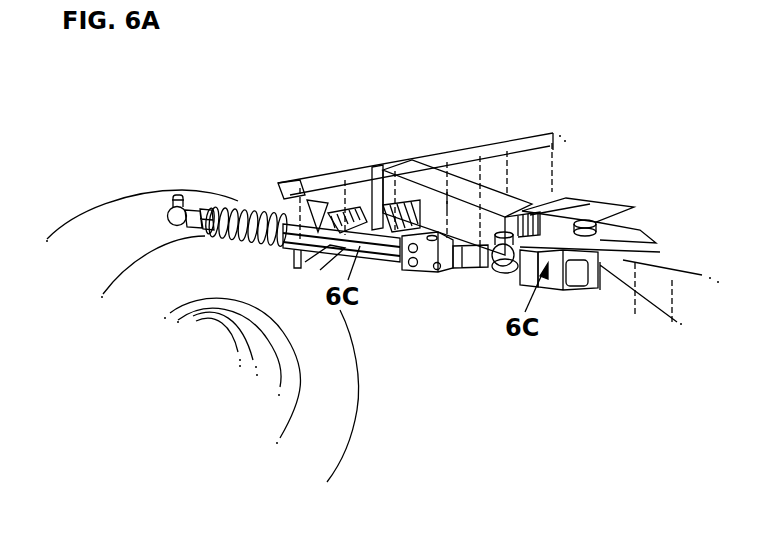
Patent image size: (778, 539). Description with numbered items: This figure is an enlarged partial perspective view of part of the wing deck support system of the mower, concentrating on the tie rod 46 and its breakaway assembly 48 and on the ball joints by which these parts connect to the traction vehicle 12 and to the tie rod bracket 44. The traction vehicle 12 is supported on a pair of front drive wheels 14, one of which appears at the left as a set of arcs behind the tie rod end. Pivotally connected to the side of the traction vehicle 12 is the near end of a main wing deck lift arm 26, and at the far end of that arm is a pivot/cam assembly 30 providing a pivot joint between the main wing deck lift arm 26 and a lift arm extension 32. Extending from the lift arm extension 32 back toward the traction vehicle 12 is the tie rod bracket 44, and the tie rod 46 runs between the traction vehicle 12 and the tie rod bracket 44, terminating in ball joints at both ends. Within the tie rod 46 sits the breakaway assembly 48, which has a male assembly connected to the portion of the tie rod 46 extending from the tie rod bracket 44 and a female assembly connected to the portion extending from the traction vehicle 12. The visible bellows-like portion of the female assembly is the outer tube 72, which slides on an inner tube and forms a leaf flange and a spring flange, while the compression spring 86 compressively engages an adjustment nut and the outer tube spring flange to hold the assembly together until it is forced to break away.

The traction vehicle 12 is at (357, 205).
The front drive wheels 14 is at (340, 405).
The main wing deck lift arm 26 is at (455, 188).
The pivot/cam assembly 30 is at (652, 203).
The lift arm extension 32 is at (663, 268).
The tie rod bracket 44 is at (585, 265).
The tie rod 46 is at (215, 209).
The breakaway assembly 48 is at (429, 272).
The outer tube 72 is at (334, 256).
The compression spring 86 is at (278, 202).